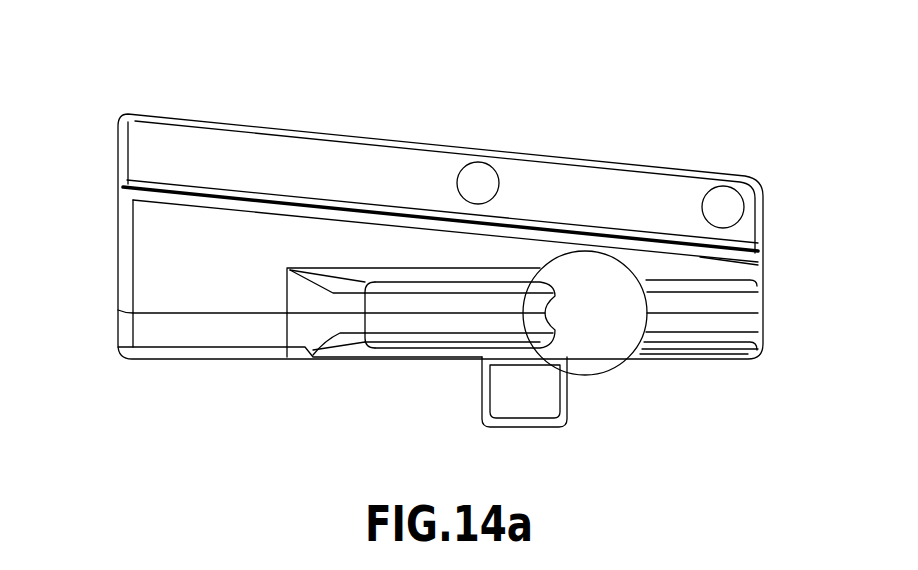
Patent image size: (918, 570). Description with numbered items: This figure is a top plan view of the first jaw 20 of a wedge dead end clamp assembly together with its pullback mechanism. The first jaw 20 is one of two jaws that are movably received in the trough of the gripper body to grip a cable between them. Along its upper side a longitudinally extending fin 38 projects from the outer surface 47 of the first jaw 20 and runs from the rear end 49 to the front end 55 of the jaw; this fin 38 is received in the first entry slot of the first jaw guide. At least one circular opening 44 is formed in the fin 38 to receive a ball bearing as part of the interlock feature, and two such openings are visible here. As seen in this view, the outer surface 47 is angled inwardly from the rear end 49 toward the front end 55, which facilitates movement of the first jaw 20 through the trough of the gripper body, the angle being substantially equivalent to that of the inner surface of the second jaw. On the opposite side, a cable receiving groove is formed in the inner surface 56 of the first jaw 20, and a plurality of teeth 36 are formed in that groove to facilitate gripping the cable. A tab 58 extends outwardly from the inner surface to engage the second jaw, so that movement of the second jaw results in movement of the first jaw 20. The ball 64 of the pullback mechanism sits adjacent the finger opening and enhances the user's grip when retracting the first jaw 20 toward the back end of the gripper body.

The first jaw 20 is at (480, 112).
The teeth 36 is at (438, 366).
The fin 38 is at (365, 162).
The fin opening 44 is at (488, 171).
The outer surface 47 is at (288, 200).
The rear end 49 is at (118, 242).
The front end 55 is at (765, 303).
The inner surface 56 is at (210, 362).
The tab 58 is at (568, 420).
The ball 64 is at (572, 324).